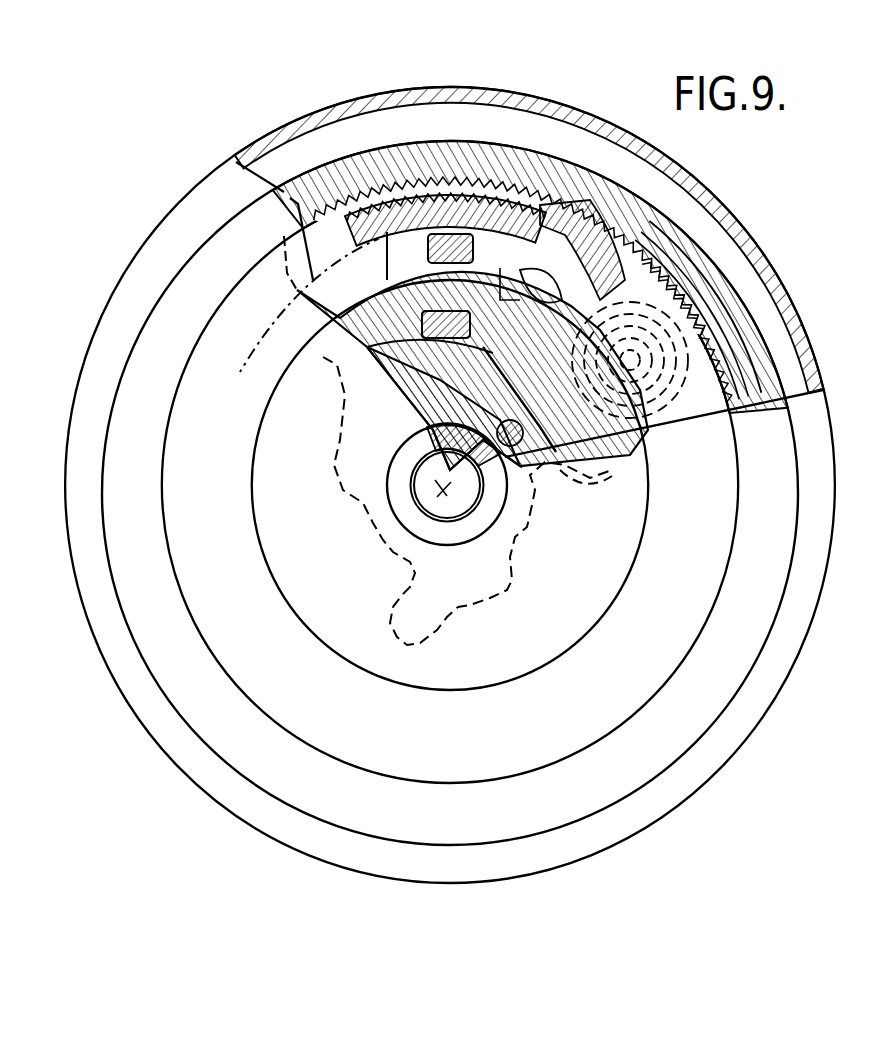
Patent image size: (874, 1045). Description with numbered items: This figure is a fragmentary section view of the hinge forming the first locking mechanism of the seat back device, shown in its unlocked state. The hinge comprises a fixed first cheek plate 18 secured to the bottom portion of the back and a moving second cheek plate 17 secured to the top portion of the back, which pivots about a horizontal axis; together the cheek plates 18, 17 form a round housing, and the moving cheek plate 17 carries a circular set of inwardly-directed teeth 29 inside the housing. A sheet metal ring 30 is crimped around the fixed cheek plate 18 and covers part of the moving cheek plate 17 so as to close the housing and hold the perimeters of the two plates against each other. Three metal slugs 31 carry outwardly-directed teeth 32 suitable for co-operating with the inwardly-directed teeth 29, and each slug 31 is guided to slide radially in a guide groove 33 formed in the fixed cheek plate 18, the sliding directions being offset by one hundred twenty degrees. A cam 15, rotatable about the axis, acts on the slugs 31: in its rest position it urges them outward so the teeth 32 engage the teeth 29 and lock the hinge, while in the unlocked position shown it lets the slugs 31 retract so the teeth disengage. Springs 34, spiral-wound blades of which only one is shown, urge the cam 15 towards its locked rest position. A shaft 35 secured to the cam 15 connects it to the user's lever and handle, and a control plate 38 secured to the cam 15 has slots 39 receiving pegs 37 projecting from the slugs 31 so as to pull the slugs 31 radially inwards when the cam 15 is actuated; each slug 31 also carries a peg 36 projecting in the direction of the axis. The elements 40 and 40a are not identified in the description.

The cam 15 is at (540, 528).
The moving second cheek plate 17 is at (752, 307).
The fixed first cheek plate 18 is at (776, 665).
The inwardly-directed teeth 29 is at (672, 280).
The sheet metal ring 30 is at (760, 250).
The metal slug 31 is at (412, 232).
The outwardly-directed teeth 32 is at (513, 343).
The guide groove 33 is at (388, 235).
The spring 34 is at (668, 424).
The shaft 35 is at (462, 502).
The peg 36 is at (455, 236).
The peg 37 is at (400, 337).
The control plate 38 is at (483, 347).
The slot 39 is at (425, 412).
The pawl arm 40 is at (465, 288).
The pawl tip 40a is at (533, 303).